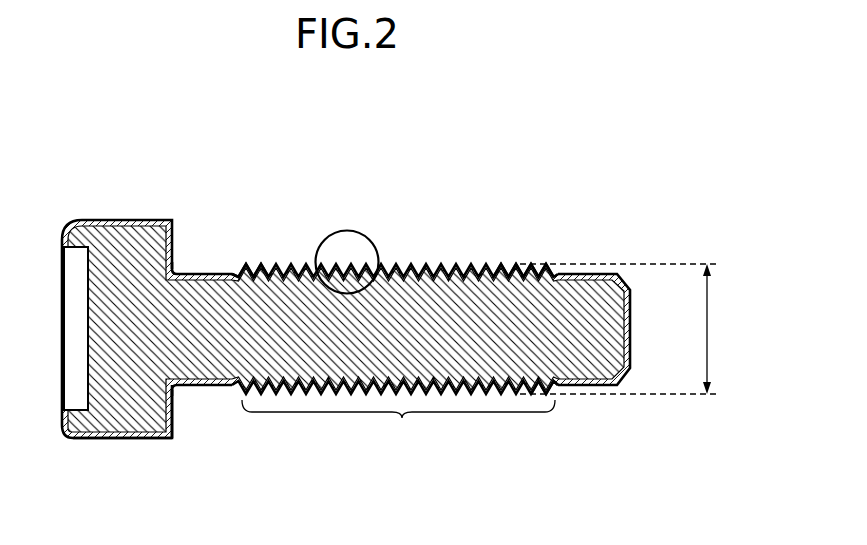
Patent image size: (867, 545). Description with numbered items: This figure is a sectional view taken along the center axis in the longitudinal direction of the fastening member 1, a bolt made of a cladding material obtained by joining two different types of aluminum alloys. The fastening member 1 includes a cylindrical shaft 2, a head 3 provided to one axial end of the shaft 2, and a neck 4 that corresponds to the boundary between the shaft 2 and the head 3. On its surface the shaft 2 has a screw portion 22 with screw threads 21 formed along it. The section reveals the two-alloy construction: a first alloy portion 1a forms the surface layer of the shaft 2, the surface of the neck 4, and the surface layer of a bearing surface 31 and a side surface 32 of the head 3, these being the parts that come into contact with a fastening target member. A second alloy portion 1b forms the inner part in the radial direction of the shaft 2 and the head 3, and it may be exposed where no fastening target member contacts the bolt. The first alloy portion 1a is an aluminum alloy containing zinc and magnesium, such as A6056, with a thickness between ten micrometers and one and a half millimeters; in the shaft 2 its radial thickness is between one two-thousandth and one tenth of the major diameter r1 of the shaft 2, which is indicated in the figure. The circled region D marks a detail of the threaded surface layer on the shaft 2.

The fastening member 1 is at (541, 167).
The first alloy portion 1a is at (258, 263).
The second alloy portion 1b is at (617, 327).
The shaft 2 is at (427, 264).
The screw threads 21 is at (522, 261).
The screw portion 22 is at (398, 421).
The head 3 is at (133, 222).
The bearing surface 31 is at (173, 433).
The side surface 32 is at (123, 440).
The neck 4 is at (178, 270).
The detail region D is at (350, 228).
The major diameter r1 is at (623, 329).